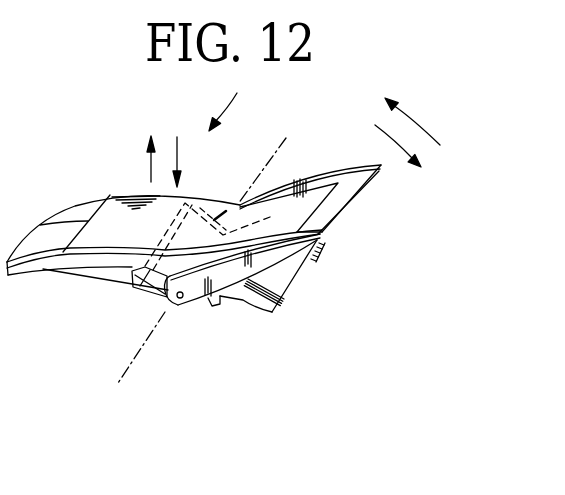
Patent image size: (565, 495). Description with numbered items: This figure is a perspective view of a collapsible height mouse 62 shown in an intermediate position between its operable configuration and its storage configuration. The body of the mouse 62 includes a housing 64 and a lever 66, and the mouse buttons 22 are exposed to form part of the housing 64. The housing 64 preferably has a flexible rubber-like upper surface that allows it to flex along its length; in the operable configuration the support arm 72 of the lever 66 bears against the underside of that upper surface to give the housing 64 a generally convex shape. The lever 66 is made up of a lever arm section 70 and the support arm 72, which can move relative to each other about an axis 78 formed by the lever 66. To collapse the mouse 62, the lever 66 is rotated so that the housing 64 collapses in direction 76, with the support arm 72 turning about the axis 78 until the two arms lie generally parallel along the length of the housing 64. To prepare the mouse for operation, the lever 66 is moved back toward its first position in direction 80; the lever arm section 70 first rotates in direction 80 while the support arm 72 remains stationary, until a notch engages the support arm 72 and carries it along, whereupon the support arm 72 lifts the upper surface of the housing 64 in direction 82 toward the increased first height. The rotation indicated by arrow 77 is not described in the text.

The mouse buttons 22 is at (83, 210).
The collapsible height mouse 62 is at (228, 100).
The housing 64 is at (312, 273).
The lever 66 is at (366, 206).
The lever arm section 70 is at (303, 183).
The support arm 72 is at (158, 283).
The direction 76 is at (178, 152).
The rotation arrow 77 is at (405, 112).
The axis 78 is at (128, 374).
The direction 80 is at (403, 148).
The direction 82 is at (150, 160).